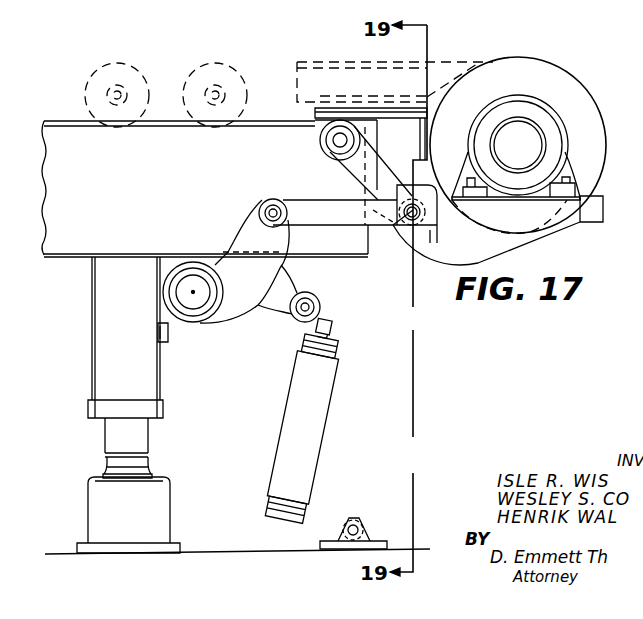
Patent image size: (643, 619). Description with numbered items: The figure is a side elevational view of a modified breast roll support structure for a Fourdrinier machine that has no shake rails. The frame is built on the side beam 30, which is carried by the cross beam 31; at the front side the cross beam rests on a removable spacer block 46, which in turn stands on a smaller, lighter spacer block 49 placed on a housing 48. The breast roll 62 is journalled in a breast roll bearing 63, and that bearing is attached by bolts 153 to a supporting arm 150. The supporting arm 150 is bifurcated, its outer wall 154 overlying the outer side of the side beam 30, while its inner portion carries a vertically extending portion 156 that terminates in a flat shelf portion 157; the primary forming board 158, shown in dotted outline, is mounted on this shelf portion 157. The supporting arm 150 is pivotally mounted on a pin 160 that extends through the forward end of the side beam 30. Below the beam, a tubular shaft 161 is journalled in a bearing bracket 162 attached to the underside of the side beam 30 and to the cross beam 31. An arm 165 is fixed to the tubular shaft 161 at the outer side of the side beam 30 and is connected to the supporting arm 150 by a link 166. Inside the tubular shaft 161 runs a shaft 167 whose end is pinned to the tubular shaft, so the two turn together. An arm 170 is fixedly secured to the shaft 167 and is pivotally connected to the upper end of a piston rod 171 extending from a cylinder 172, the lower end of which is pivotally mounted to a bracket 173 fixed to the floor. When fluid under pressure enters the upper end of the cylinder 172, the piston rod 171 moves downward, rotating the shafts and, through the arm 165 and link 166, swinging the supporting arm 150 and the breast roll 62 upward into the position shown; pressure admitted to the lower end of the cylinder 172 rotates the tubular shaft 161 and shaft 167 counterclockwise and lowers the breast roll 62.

The side beam 30 is at (205, 189).
The cross beam 31 is at (125, 337).
The removable spacer block 46 is at (126, 437).
The housing 48 is at (128, 515).
The spacer block 49 is at (147, 464).
The breast roll 62 is at (548, 73).
The breast roll bearing 63 is at (548, 122).
The supporting arm 150 is at (513, 246).
The bolt 153 is at (577, 178).
The outer wall 154 is at (348, 172).
The vertically extending portion 156 is at (370, 154).
The shelf portion 157 is at (342, 108).
The primary forming board 158 is at (345, 58).
The pin 160 is at (332, 142).
The tubular shaft 161 is at (203, 317).
The bearing bracket 162 is at (172, 328).
The arm 165 is at (248, 261).
The link 166 is at (348, 214).
The shaft 167 is at (193, 283).
The arm 170 is at (297, 281).
The piston rod 171 is at (318, 323).
The cylinder 172 is at (322, 428).
The bracket 173 is at (368, 530).